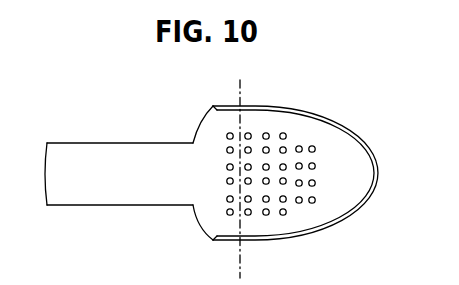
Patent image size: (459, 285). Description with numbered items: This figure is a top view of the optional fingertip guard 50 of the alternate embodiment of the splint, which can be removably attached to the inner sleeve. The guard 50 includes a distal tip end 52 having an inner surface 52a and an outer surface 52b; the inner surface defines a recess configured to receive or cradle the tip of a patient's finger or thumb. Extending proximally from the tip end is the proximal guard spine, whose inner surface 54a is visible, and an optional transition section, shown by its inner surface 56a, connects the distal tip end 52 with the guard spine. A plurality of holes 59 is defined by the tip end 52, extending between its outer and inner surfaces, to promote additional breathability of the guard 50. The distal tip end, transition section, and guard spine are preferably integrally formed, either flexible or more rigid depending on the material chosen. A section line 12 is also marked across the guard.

The fingertip guard 50 is at (232, 172).
The section line 12 is at (251, 86).
The distal tip end 52 is at (317, 172).
The inner surface 52a is at (338, 203).
The outer surface 52b is at (377, 193).
The inner surface 54a is at (118, 181).
The inner surface 56a is at (202, 181).
The holes 59 is at (283, 138).